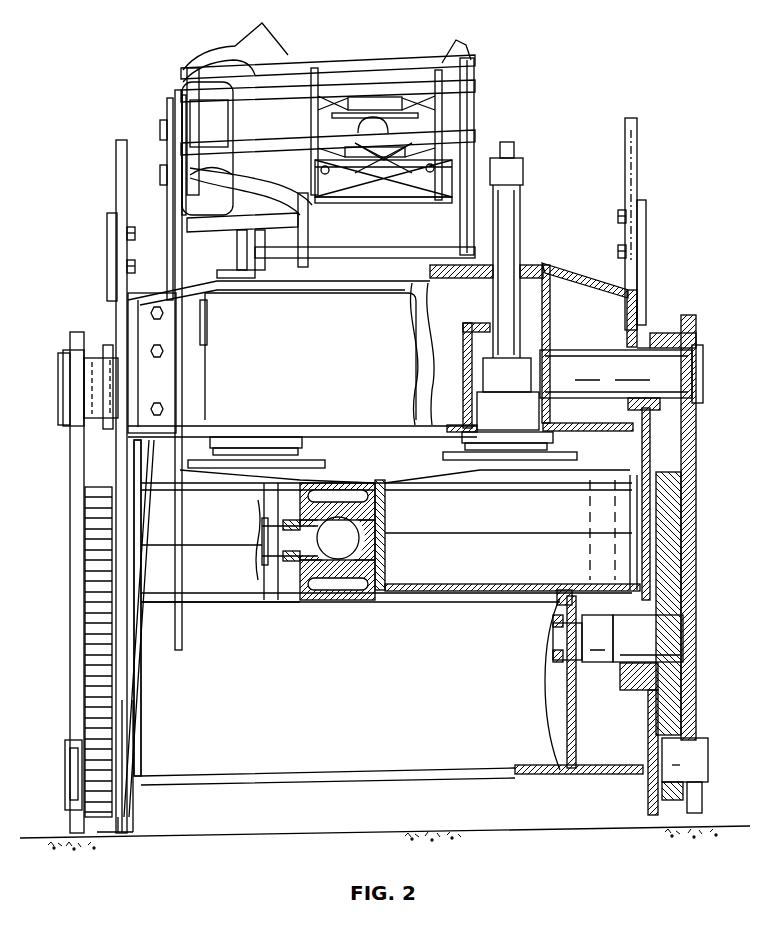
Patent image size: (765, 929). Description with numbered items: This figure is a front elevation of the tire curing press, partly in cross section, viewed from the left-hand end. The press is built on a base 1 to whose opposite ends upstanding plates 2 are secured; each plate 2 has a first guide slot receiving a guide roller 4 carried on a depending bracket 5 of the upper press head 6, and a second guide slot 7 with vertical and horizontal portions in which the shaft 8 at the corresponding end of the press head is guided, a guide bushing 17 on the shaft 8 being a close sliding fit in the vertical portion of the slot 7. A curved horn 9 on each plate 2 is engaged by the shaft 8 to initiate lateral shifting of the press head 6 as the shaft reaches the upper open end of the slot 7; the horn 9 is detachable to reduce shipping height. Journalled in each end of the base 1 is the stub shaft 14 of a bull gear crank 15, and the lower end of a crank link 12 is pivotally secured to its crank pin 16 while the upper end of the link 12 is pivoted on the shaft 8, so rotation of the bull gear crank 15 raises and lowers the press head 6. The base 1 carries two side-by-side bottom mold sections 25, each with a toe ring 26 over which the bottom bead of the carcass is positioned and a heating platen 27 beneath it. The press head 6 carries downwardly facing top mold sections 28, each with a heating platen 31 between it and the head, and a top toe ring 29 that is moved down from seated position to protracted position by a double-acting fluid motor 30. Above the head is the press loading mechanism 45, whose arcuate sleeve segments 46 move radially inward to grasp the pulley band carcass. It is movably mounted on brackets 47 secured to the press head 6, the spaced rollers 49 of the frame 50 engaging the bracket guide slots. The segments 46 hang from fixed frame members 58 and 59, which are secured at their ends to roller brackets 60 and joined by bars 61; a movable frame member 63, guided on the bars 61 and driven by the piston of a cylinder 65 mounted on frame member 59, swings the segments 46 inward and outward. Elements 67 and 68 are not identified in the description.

The base 1 is at (362, 768).
The upstanding plate 2 is at (108, 294).
The guide roller 4 is at (141, 648).
The depending bracket 5 is at (142, 510).
The upper press head 6 is at (560, 262).
The second guide slot 7 is at (645, 312).
The shaft 8 is at (58, 390).
The curved horn 9 is at (118, 181).
The crank link 12 is at (70, 463).
The stub shaft 14 is at (607, 665).
The bull gear crank 15 is at (92, 560).
The crank pin 16 is at (65, 790).
The guide bushing 17 is at (644, 379).
The bottom mold section 25 is at (318, 602).
The toe ring 26 is at (288, 567).
The heating platen 27 is at (357, 600).
The top mold section 28 is at (383, 529).
The top toe ring 29 is at (268, 527).
The double-acting fluid motor 30 is at (303, 243).
The heating platen 31 is at (350, 483).
The press loading mechanism 45 is at (386, 50).
The arcuate sleeve segment 46 is at (274, 50).
The bracket 47 is at (177, 360).
The roller 49 is at (168, 175).
The frame 50 is at (333, 58).
The fixed frame member 58 is at (198, 67).
The fixed frame member 59 is at (215, 148).
The roller bracket 60 is at (170, 108).
The bar 61 is at (325, 175).
The movable frame member 63 is at (217, 97).
The cylinder 65 is at (387, 150).
The frame 67 is at (342, 218).
The cable 68 is at (305, 215).